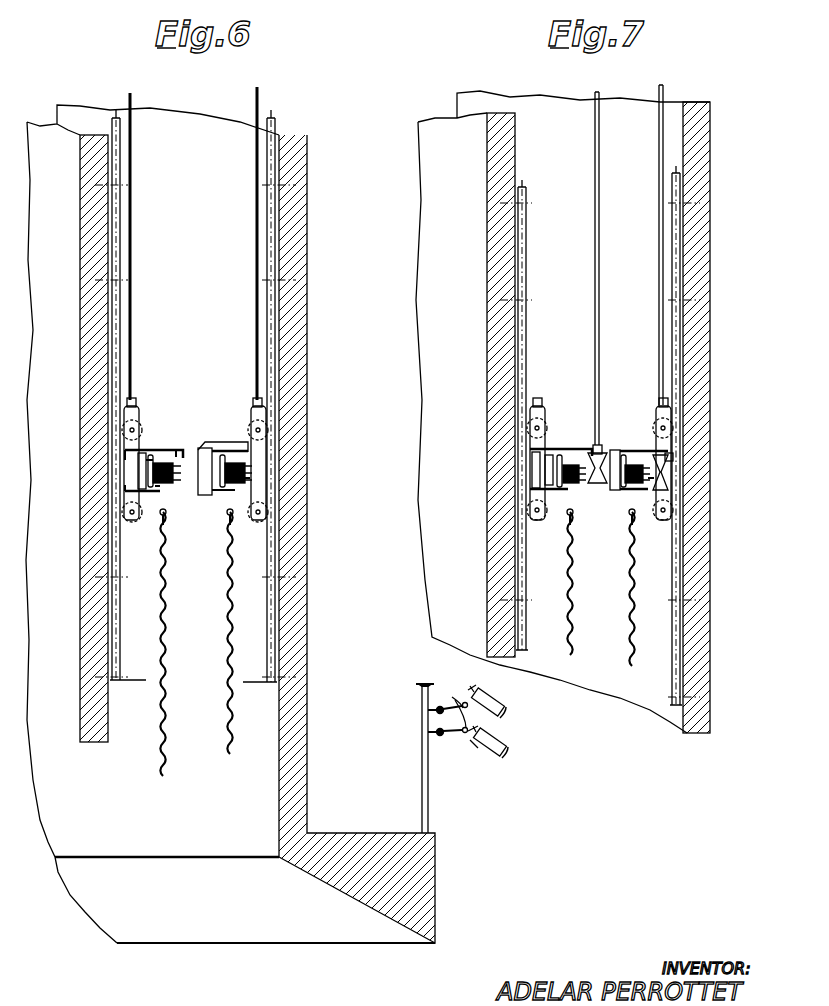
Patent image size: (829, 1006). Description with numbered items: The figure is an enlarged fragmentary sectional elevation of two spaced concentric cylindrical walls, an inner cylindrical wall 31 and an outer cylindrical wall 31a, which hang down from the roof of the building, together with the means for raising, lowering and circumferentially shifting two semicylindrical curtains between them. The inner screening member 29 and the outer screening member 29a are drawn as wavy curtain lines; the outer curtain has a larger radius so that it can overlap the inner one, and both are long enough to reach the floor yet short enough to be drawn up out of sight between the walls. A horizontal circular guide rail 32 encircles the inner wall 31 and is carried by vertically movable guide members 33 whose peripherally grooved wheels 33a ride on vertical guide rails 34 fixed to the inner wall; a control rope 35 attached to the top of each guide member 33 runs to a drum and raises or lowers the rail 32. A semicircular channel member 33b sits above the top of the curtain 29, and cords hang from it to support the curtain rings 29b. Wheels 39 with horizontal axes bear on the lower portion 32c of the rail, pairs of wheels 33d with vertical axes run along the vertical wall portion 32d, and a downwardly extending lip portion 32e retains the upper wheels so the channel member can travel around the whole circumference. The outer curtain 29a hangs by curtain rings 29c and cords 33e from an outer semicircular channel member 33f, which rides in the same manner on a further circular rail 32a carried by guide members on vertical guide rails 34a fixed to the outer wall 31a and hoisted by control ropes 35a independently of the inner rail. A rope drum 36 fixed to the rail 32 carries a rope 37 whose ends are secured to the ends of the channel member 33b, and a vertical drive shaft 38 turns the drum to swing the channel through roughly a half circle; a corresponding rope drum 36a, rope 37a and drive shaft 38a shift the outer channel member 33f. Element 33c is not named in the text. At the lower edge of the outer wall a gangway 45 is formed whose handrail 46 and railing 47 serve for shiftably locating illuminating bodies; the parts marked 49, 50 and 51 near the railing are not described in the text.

In FIG. 6, the inner screening member 29 is at (166, 628).
In FIG. 7, the inner screening member 29 is at (573, 569).
In FIG. 6, the outer screening member 29a is at (230, 661).
In FIG. 7, the outer screening member 29a is at (631, 612).
In FIG. 6, the curtain rings 29b is at (163, 516).
In FIG. 7, the curtain rings 29b is at (570, 516).
In FIG. 6, the curtain rings 29c is at (232, 516).
In FIG. 7, the curtain rings 29c is at (632, 517).
In FIG. 6, the inner cylindrical wall 31 is at (109, 741).
In FIG. 7, the inner cylindrical wall 31 is at (487, 619).
In FIG. 6, the outer cylindrical wall 31a is at (279, 800).
In FIG. 7, the outer cylindrical wall 31a is at (710, 681).
In FIG. 6, the circular guide rail 32 is at (164, 513).
In FIG. 7, the circular guide rail 32 is at (560, 449).
In FIG. 6, the circular rail 32a is at (212, 497).
In FIG. 7, the circular rail 32a is at (613, 452).
In FIG. 6, the lower portion of circular rail 32c is at (129, 489).
In FIG. 6, the vertical wall portion of circular rail 32d is at (146, 460).
In FIG. 6, the lip portion 32e is at (183, 451).
In FIG. 6, the guide member 33 is at (137, 412).
In FIG. 7, the guide member 33 is at (545, 406).
In FIG. 6, the peripherally grooved wheels 33a is at (133, 432).
In FIG. 7, the peripherally grooved wheels 33a is at (657, 392).
In FIG. 6, the semicircular channel member 33b is at (176, 470).
In FIG. 7, the semicircular channel member 33b is at (562, 471).
In FIG. 6, the latch lug 33c is at (160, 487).
In FIG. 6, the wheels 33d is at (152, 466).
In FIG. 6, the cords 33e is at (235, 490).
In FIG. 6, the outer semicircular channel member 33f is at (249, 480).
In FIG. 7, the outer semicircular channel member 33f is at (666, 484).
In FIG. 6, the vertical guide rails 34 is at (121, 223).
In FIG. 7, the vertical guide rails 34 is at (527, 360).
In FIG. 6, the vertical guide rails 34a is at (267, 217).
In FIG. 7, the vertical guide rails 34a is at (672, 347).
In FIG. 6, the control rope 35 is at (132, 245).
In FIG. 6, the control ropes 35a is at (257, 190).
In FIG. 7, the rope drum 36 is at (601, 446).
In FIG. 7, the rope drum 36a is at (674, 458).
In FIG. 7, the rope 37 is at (593, 456).
In FIG. 7, the rope 37a is at (657, 494).
In FIG. 7, the drive shaft 38 is at (600, 277).
In FIG. 7, the drive shaft 38a is at (660, 237).
In FIG. 6, the wheels 39 is at (150, 455).
In FIG. 7, the wheels 39 is at (571, 485).
In FIG. 6, the gangway 45 is at (368, 838).
In FIG. 7, the handrail 46 is at (425, 683).
In FIG. 7, the railing 47 is at (422, 776).
In FIG. 7, the limit switch 49 is at (443, 736).
In FIG. 7, the limit switch 50 is at (438, 710).
In FIG. 7, the switch levers 51 is at (451, 703).